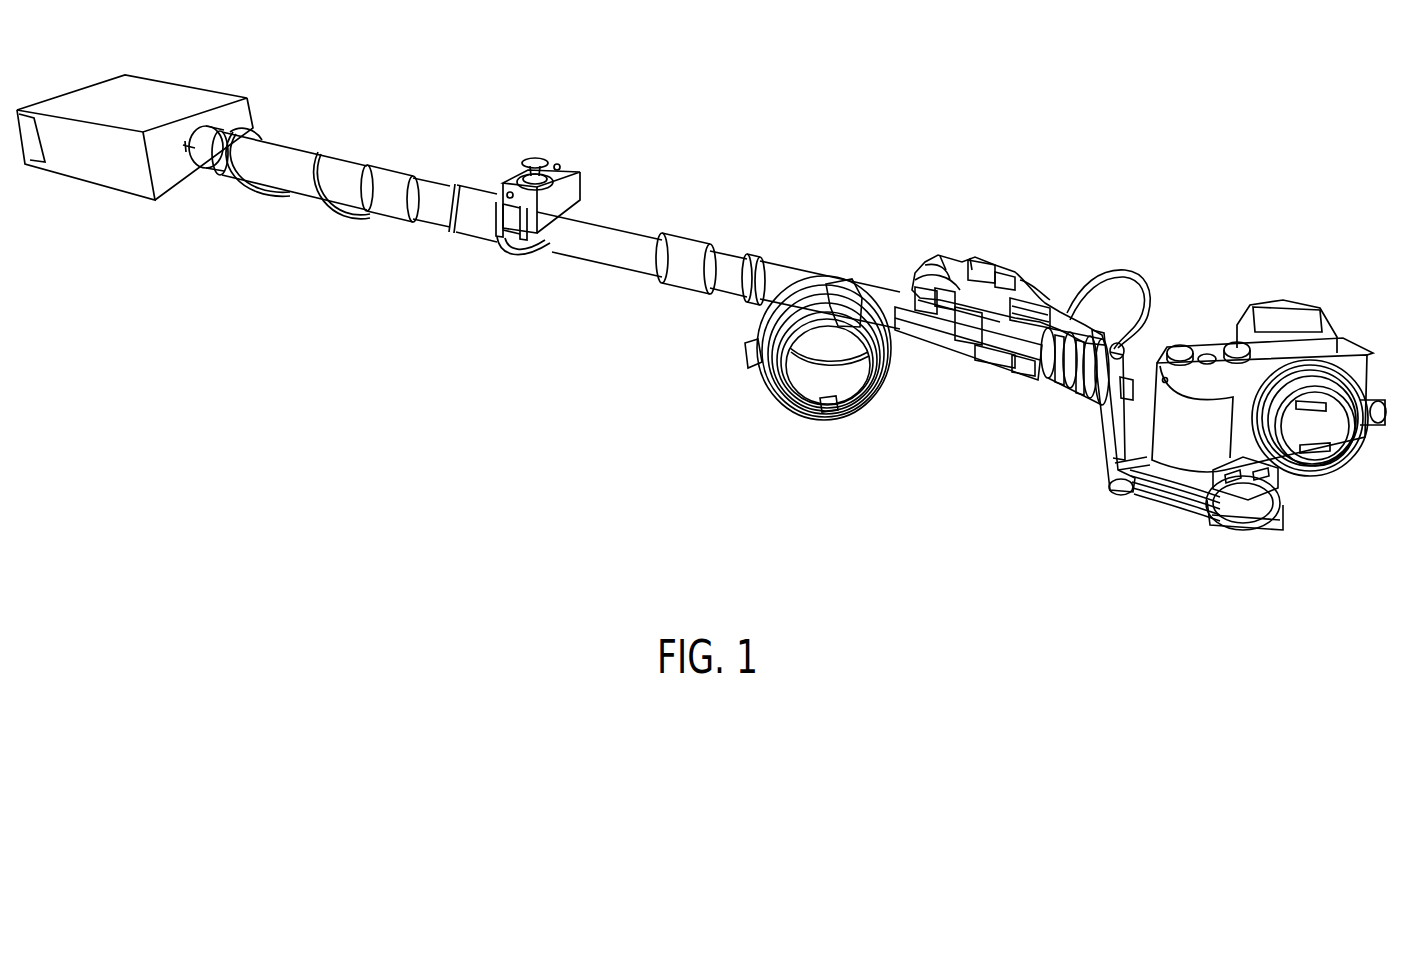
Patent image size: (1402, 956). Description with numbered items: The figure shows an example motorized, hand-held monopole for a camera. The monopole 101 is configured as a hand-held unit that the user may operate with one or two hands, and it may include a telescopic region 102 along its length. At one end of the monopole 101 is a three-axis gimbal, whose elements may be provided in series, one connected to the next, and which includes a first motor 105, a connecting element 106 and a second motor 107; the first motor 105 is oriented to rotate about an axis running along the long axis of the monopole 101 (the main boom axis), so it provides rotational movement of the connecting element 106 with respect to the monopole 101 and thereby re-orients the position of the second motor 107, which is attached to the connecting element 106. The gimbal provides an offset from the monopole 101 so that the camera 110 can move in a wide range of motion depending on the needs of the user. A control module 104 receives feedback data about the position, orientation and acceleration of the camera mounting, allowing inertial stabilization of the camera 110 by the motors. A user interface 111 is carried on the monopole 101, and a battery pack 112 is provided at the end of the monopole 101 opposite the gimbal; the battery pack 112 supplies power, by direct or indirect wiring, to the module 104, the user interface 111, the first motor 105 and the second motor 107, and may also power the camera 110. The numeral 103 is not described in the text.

The monopole 101 is at (607, 253).
The telescopic region 102 is at (757, 228).
The lower gimbal arm 103 is at (958, 372).
The control module 104 is at (1000, 240).
The first motor 105 is at (1093, 327).
The connecting element 106 is at (1093, 435).
The second motor 107 is at (1268, 523).
The camera 110 is at (1348, 345).
The user interface 111 is at (584, 190).
The battery pack 112 is at (108, 176).